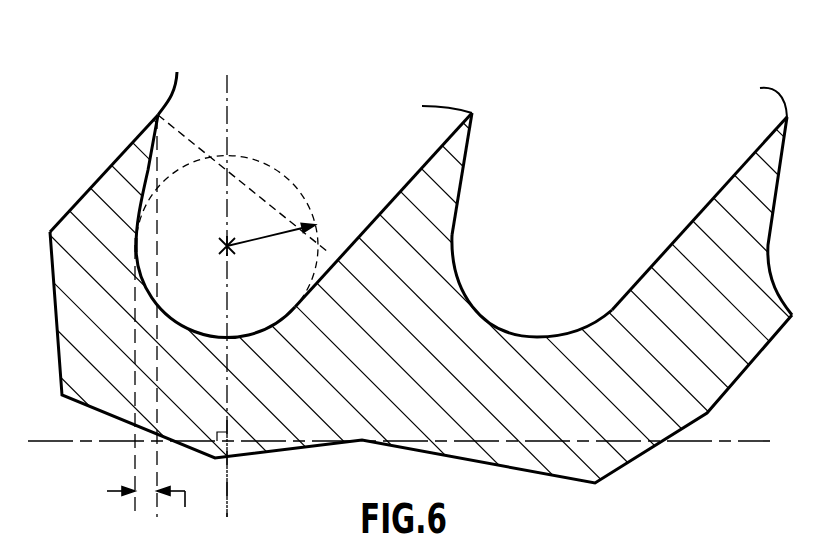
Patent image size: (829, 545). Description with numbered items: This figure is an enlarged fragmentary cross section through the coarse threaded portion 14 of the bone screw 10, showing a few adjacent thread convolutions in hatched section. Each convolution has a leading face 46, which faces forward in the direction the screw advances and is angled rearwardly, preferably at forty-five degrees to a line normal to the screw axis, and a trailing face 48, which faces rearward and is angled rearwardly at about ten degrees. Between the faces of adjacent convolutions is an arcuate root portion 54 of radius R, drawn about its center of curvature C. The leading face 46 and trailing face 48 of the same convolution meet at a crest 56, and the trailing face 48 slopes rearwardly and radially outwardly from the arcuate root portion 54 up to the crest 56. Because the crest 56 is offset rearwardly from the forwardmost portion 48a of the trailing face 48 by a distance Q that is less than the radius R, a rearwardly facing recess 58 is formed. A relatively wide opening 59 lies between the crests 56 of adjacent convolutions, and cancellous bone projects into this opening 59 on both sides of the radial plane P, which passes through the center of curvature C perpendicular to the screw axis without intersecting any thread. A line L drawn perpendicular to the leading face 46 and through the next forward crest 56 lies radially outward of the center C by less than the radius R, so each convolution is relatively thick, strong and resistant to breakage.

The bone screw 10 is at (122, 81).
The coarse threaded portion 14 is at (108, 147).
The leading face 46 is at (76, 206).
The trailing face 48 is at (149, 172).
The forwardmost portion of the trailing face 48a is at (135, 247).
The arcuate root portion 54 is at (233, 334).
The crest 56 is at (472, 81).
The rearwardly facing recess 58 is at (154, 263).
The relatively wide opening 59 is at (333, 94).
The center of curvature C is at (222, 246).
The radius R is at (248, 248).
The line L is at (250, 198).
The radial plane P is at (228, 496).
The distance Q is at (150, 508).